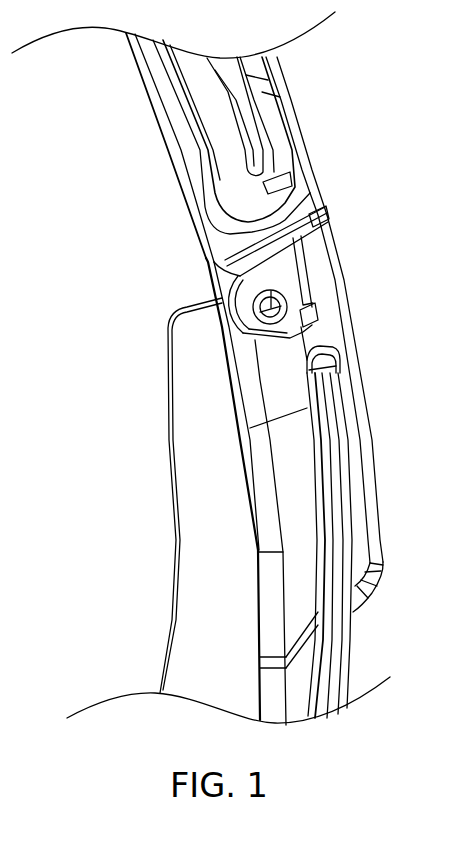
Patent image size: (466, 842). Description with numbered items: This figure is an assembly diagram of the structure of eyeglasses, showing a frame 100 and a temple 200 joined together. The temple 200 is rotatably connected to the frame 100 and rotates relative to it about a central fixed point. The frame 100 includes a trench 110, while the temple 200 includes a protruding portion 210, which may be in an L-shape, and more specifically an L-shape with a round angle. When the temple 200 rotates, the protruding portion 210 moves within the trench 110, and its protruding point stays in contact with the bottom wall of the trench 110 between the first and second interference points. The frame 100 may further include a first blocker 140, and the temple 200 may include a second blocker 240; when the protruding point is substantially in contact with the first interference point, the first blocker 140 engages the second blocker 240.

The frame 100 is at (200, 539).
The trench 110 is at (305, 318).
The first blocker 140 is at (328, 222).
The temple 200 is at (182, 127).
The protruding portion 210 is at (317, 367).
The second blocker 240 is at (312, 210).